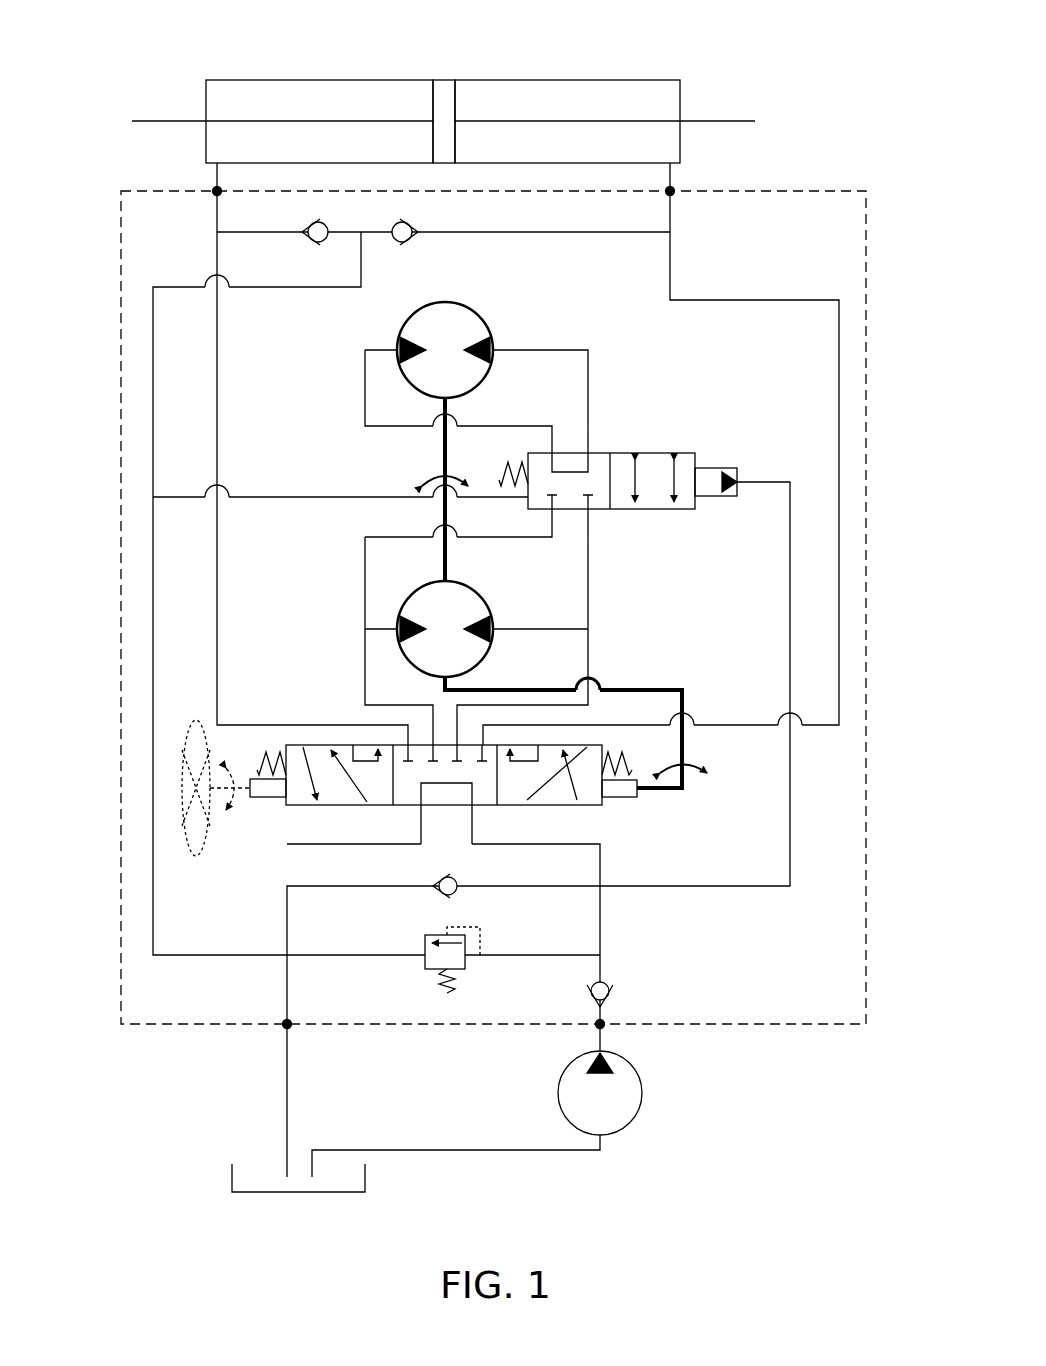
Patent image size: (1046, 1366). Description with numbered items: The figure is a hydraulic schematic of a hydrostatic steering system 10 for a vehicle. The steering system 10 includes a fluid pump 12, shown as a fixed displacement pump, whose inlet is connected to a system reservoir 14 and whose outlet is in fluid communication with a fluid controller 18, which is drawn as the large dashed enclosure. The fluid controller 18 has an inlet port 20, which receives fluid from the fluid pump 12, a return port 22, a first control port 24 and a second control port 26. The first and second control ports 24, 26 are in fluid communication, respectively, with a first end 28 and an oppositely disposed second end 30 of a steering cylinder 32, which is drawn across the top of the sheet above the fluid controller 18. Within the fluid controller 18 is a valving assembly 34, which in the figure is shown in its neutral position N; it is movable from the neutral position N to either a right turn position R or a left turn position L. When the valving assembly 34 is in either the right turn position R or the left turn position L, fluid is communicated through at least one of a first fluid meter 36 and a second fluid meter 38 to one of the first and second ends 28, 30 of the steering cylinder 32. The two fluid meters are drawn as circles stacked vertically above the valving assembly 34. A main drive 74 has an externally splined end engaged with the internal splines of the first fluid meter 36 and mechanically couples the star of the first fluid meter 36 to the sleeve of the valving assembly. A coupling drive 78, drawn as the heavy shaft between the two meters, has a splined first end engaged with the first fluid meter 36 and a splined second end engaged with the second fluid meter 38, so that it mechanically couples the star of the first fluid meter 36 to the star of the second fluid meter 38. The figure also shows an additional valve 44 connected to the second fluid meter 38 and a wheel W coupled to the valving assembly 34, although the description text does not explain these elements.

The hydrostatic steering system 10 is at (92, 106).
The fluid pump 12 is at (644, 1106).
The system reservoir 14 is at (367, 1180).
The fluid controller 18 is at (880, 284).
The inlet port 20 is at (604, 1028).
The return port 22 is at (290, 1028).
The first control port 24 is at (214, 189).
The second control port 26 is at (674, 189).
The first end 28 is at (222, 80).
The second end 30 is at (670, 80).
The steering cylinder 32 is at (478, 70).
The valving assembly 34 is at (458, 799).
The first fluid meter 36 is at (483, 590).
The second fluid meter 38 is at (483, 312).
The solenoid valve 44 is at (648, 443).
The main drive 74 is at (643, 688).
The coupling drive 78 is at (440, 516).
The wheel / fan W is at (200, 858).
The left turn position L is at (330, 812).
The neutral position N is at (447, 816).
The right turn position R is at (538, 810).